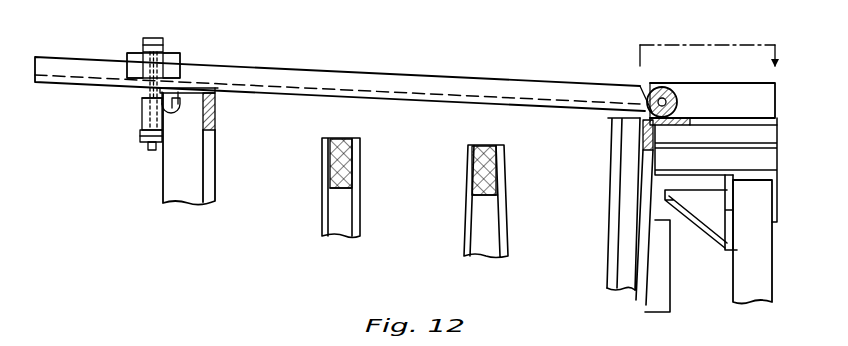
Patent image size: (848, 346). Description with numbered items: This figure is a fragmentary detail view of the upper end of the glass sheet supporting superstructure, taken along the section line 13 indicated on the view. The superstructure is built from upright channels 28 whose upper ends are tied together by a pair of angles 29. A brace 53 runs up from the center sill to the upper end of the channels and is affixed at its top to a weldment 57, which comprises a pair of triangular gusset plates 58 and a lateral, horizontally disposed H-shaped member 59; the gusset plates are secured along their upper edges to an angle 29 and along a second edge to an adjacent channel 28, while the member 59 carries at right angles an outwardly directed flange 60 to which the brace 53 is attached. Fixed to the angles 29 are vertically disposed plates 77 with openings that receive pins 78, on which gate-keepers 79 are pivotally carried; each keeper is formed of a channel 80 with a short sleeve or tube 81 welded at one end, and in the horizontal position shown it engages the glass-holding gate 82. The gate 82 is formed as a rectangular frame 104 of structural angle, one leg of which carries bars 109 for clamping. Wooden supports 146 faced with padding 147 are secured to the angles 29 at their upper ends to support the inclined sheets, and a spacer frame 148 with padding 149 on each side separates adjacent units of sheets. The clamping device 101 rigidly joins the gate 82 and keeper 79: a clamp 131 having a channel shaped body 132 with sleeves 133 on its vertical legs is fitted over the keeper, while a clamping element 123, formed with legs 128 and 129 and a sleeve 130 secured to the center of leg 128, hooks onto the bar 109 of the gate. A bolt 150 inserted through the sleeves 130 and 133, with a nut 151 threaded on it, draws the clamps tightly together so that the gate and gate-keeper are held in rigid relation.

The section line 13- 13 is at (627, 65).
The channel 28 is at (658, 296).
The angle 29 is at (688, 123).
The brace 53 is at (752, 272).
The weldment 57 is at (688, 222).
The gusset plate 58 is at (638, 290).
The H-shaped member 59 is at (685, 152).
The flange 60 is at (728, 246).
The vertically disposed plate 77 is at (702, 90).
The pin 78 is at (668, 102).
The gate-keeper 79 is at (342, 72).
The channel 80 is at (428, 78).
The sleeve 81 is at (661, 87).
The gate 82 is at (207, 148).
The clamping device 101 is at (138, 48).
The rectangular frame 104 is at (184, 183).
The bar 109 is at (192, 88).
The clamping element 123 is at (140, 122).
The leg 128 is at (141, 134).
The leg 129 is at (178, 124).
The sleeve 130 is at (142, 110).
The clamp 131 is at (127, 58).
The channel shaped body 132 is at (170, 62).
The sleeve 133 is at (153, 46).
The support 146 is at (628, 208).
The padding 147 is at (612, 180).
The spacer frame 148 is at (352, 163).
The padding 149 is at (328, 180).
The bolt 150 is at (157, 38).
The nut 151 is at (150, 150).